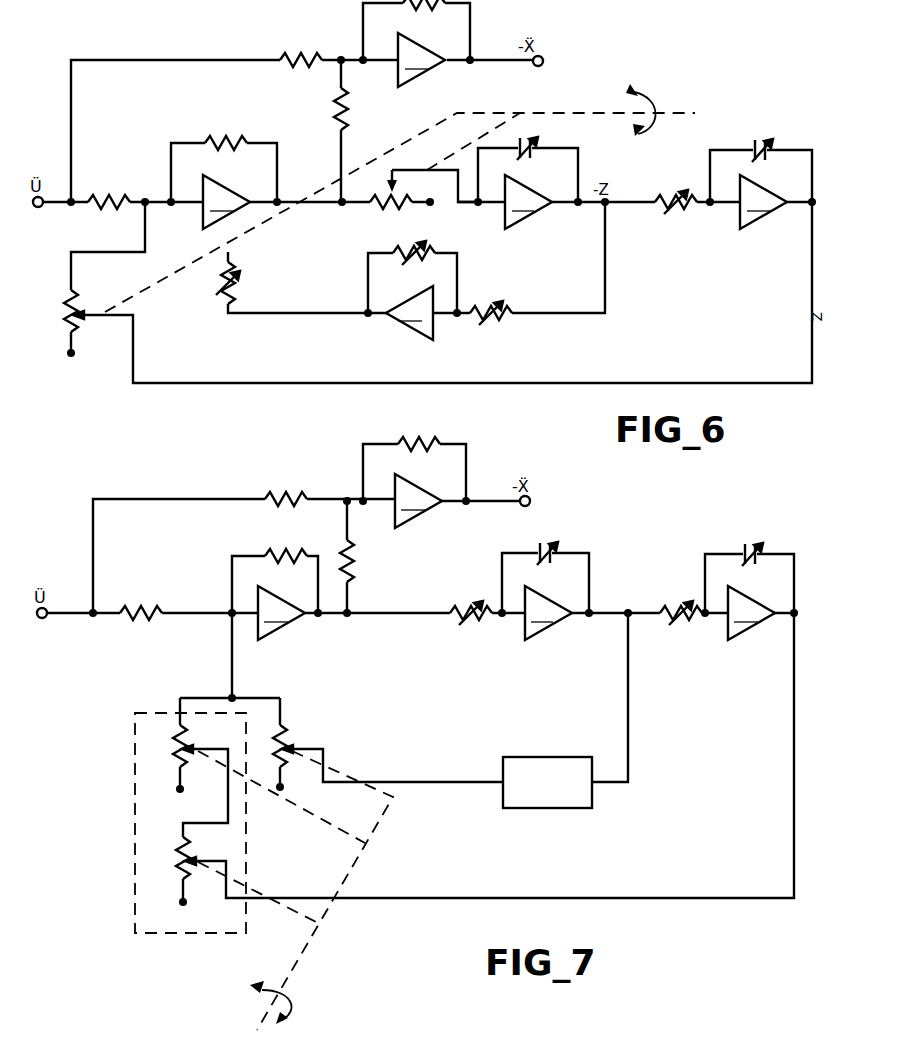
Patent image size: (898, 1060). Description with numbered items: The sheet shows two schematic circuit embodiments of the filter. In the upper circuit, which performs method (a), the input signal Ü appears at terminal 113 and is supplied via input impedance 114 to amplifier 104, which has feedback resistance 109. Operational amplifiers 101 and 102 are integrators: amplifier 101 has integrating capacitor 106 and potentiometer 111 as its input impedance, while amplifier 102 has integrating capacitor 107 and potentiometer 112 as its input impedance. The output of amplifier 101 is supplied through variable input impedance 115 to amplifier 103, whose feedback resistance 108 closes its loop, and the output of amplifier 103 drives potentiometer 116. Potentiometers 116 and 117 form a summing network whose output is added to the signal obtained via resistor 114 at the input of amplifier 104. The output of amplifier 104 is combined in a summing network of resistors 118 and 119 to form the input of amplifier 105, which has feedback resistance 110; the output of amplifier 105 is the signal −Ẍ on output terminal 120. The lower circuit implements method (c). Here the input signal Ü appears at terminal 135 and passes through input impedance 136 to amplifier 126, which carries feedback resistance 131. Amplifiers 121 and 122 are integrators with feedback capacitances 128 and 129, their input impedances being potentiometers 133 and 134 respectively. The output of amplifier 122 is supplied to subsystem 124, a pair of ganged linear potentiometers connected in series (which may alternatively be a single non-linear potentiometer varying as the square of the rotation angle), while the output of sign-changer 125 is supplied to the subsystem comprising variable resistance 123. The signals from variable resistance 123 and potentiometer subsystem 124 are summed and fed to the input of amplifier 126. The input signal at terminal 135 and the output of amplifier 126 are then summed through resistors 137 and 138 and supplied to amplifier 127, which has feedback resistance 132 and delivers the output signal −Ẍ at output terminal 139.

In FIG. 6, the operational amplifier 101 is at (528, 202).
In FIG. 6, the operational amplifier 102 is at (763, 202).
In FIG. 6, the operational amplifier 103 is at (409, 313).
In FIG. 6, the amplifier 104 is at (226, 202).
In FIG. 6, the amplifier 105 is at (421, 60).
In FIG. 6, the integrating capacitor 106 is at (540, 136).
In FIG. 6, the integrating capacitor 107 is at (757, 138).
In FIG. 6, the feedback resistance 108 is at (420, 248).
In FIG. 6, the feedback resistance 109 is at (232, 125).
In FIG. 6, the feedback resistance 110 is at (422, 5).
In FIG. 6, the potentiometer 111 is at (385, 208).
In FIG. 6, the potentiometer 112 is at (672, 212).
In FIG. 6, the terminal 113 is at (38, 208).
In FIG. 6, the input impedance 114 is at (104, 208).
In FIG. 6, the variable input impedance 115 is at (500, 322).
In FIG. 6, the potentiometer 116 is at (235, 292).
In FIG. 6, the potentiometer 117 is at (66, 322).
In FIG. 6, the resistor 118 is at (336, 102).
In FIG. 6, the resistor 119 is at (300, 55).
In FIG. 6, the output terminal 120 is at (543, 62).
In FIG. 7, the amplifier 121 is at (548, 613).
In FIG. 7, the amplifier 122 is at (751, 613).
In FIG. 7, the variable resistance 123 is at (290, 740).
In FIG. 7, the pair of ganged linear potentiometers 124 is at (133, 793).
In FIG. 7, the sign-changer 125 is at (530, 810).
In FIG. 7, the amplifier 126 is at (281, 613).
In FIG. 7, the amplifier 127 is at (418, 501).
In FIG. 7, the feedback capacitance 128 is at (560, 540).
In FIG. 7, the feedback capacitance 129 is at (744, 545).
In FIG. 7, the feedback resistance 131 is at (283, 551).
In FIG. 7, the feedback resistance 132 is at (416, 440).
In FIG. 7, the potentiometer 133 is at (466, 624).
In FIG. 7, the potentiometer 134 is at (674, 624).
In FIG. 7, the terminal 135 is at (42, 619).
In FIG. 7, the input impedance 136 is at (140, 618).
In FIG. 7, the resistor 137 is at (352, 562).
In FIG. 7, the resistor 138 is at (290, 494).
In FIG. 7, the output terminal 139 is at (531, 502).